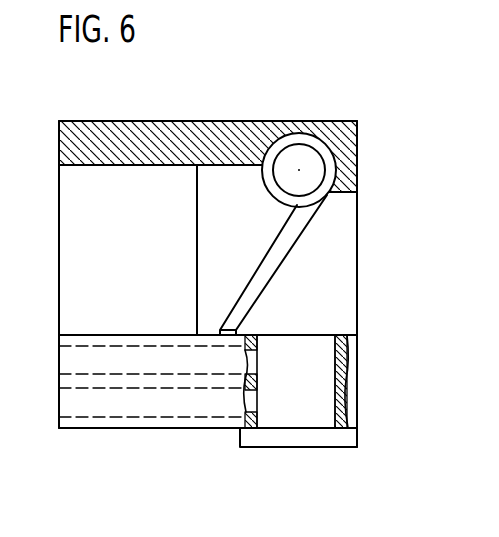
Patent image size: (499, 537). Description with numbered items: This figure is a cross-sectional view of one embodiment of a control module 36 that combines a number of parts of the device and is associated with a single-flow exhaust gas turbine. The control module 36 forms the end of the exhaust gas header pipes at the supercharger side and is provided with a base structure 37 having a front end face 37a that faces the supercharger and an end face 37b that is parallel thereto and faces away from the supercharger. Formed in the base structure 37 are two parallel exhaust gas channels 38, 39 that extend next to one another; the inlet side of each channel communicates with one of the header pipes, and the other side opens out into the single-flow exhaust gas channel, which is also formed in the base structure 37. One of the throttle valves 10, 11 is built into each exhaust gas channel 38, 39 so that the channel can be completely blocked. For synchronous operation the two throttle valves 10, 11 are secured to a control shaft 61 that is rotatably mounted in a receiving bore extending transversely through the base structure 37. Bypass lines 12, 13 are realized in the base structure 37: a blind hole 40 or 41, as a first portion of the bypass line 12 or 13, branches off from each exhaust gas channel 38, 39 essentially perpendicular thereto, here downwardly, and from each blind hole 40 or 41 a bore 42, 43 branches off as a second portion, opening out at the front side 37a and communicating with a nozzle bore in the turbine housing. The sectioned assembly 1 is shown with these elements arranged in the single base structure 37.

The housing 1 is at (225, 254).
The throttle valve 10 is at (327, 265).
The throttle valve 11 is at (260, 283).
The bypass line 12 is at (144, 360).
The bypass line 13 is at (148, 400).
The control module 36 is at (332, 117).
The base structure 37 is at (180, 140).
The front end face 37a is at (58, 228).
The end face 37b is at (357, 215).
The exhaust gas channel 38 is at (317, 250).
The exhaust gas channel 39 is at (345, 277).
The blind hole 40 is at (340, 391).
The blind hole 41 is at (340, 369).
The bore 42 is at (110, 350).
The bore 43 is at (117, 413).
The control shaft 61 is at (297, 157).